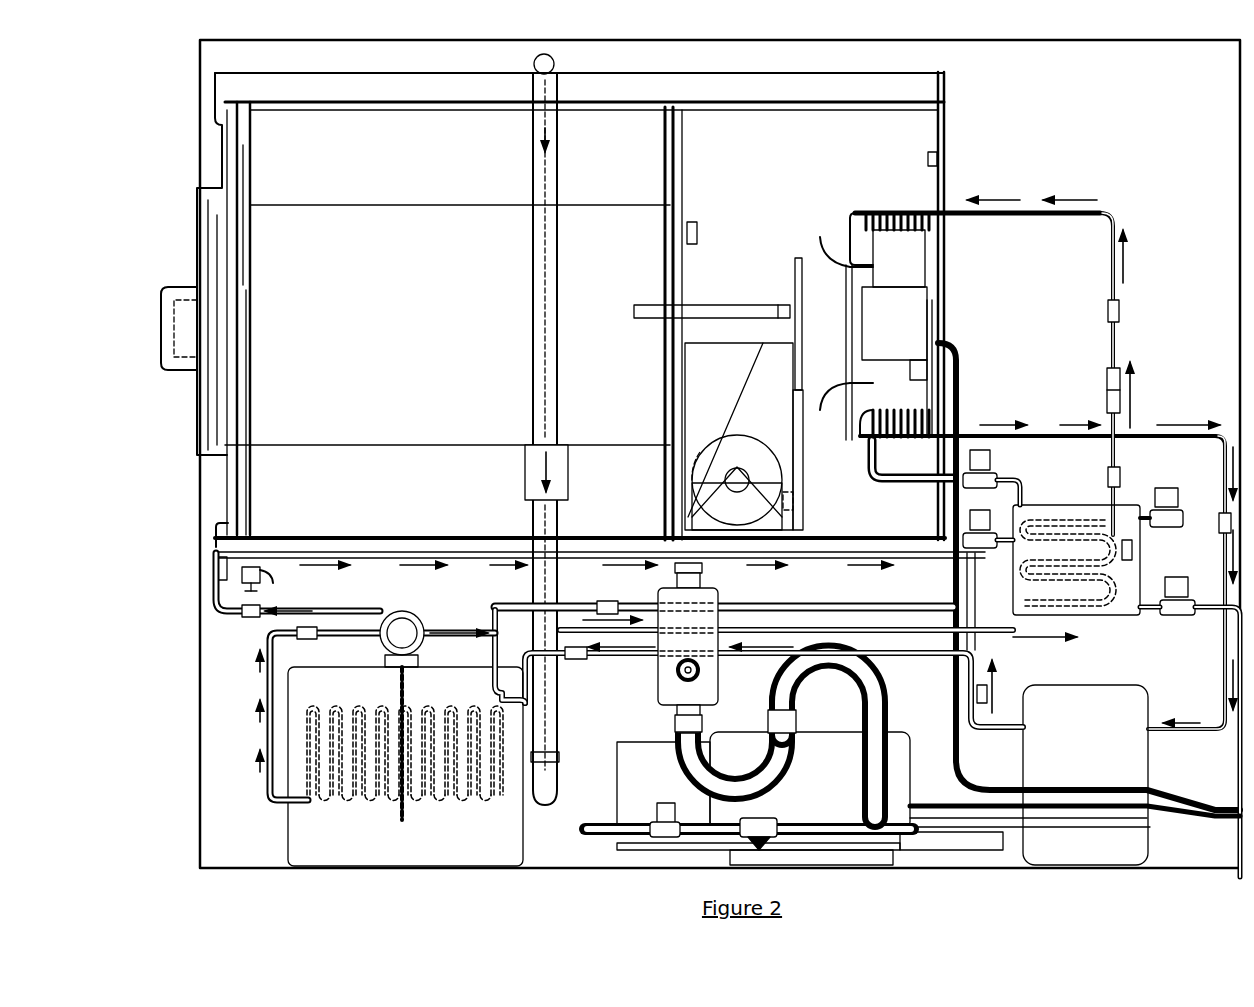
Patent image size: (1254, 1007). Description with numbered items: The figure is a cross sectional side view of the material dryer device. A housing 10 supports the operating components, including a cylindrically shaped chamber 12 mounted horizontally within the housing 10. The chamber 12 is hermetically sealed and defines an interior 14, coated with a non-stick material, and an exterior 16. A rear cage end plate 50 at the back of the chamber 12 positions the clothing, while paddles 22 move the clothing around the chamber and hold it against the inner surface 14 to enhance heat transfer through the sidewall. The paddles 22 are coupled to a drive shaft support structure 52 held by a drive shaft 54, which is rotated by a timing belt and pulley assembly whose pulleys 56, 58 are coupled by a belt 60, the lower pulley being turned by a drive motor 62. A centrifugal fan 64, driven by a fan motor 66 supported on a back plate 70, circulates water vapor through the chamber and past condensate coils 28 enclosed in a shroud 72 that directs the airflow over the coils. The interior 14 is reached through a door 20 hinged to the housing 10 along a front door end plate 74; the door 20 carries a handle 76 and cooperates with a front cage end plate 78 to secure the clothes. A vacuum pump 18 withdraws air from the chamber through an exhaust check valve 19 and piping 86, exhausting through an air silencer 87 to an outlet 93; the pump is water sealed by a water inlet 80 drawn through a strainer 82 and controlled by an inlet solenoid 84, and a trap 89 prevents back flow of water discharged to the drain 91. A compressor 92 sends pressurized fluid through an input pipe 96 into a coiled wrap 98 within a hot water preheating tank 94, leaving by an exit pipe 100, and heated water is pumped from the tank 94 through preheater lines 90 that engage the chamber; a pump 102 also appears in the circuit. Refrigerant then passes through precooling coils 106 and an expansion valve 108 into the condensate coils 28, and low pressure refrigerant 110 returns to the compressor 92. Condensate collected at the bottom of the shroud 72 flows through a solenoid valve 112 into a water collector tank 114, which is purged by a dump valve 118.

The housing 10 is at (1140, 46).
The chamber 12 is at (390, 242).
The interior 14 is at (430, 114).
The exterior 16 is at (420, 98).
The vacuum pump 18 is at (833, 748).
The exhaust check valve 19 is at (523, 472).
The door 20 is at (460, 267).
The paddles 22 is at (602, 476).
The condensate coils 28 is at (960, 195).
The rear cage end plate 50 is at (661, 150).
The drive shaft support structure 52 is at (726, 304).
The drive shaft 54 is at (705, 302).
The pulley 56 is at (801, 254).
The pulleys 58 is at (794, 478).
The belt 60 is at (806, 433).
The drive motor 62 is at (742, 340).
The centrifugal fan 64 is at (870, 275).
The fan motor 66 is at (1003, 203).
The back plate 70 is at (948, 142).
The shroud 72 is at (912, 205).
The front door end plate 74 is at (238, 160).
The handle 76 is at (168, 340).
The front cage end plate 78 is at (242, 235).
The water inlet 80 is at (1158, 827).
The strainer 82 is at (768, 812).
The inlet solenoid 84 is at (660, 802).
The piping 86 is at (528, 336).
The air silencer 87 is at (652, 668).
The trap 89 is at (852, 660).
The hot water preheater lines 90 is at (600, 517).
The drain 91 is at (940, 842).
The compressor 92 is at (1060, 708).
The outlet 93 is at (837, 525).
The hot water preheating tank 94 is at (392, 842).
The input pipe 96 is at (920, 656).
The coiled wrap 98 is at (352, 795).
The exit pipe 100 is at (270, 802).
The pump 102 is at (424, 614).
The precooling coils 106 is at (1117, 520).
The expansion valve 108 is at (1124, 358).
The low pressure refrigerant 110 is at (1148, 428).
The solenoid valve 112 is at (990, 438).
The water collector tank 114 is at (1127, 597).
The dump valve 118 is at (1188, 600).